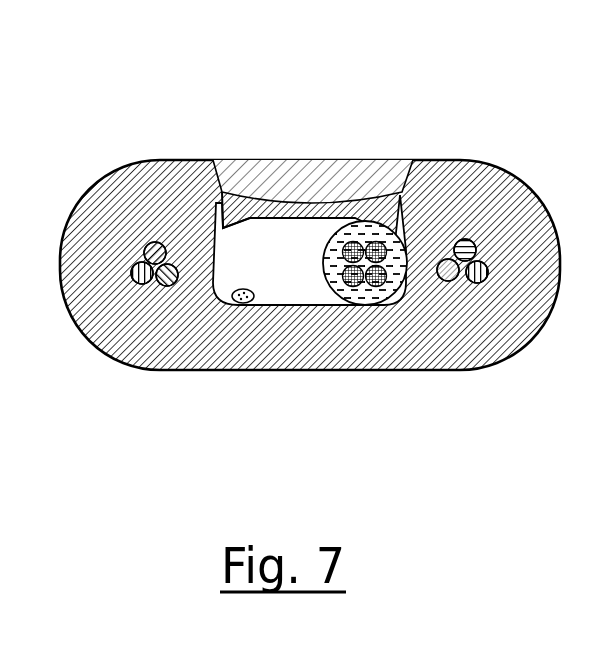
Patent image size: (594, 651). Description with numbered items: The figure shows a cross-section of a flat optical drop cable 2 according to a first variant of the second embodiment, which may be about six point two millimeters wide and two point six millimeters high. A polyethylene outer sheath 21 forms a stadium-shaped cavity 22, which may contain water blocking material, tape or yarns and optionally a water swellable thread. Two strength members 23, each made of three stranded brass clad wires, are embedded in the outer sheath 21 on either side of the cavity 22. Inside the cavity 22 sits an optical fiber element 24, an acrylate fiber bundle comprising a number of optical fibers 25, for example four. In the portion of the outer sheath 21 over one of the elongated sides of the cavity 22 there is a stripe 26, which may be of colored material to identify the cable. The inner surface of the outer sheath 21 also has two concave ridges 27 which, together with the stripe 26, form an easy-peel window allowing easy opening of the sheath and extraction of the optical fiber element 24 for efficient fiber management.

The flat optical drop cable 2 is at (296, 235).
The outer sheath 21 is at (447, 160).
The cavity 22 is at (258, 232).
The strength members 23 is at (134, 265).
The optical fiber element 24 is at (335, 303).
The optical fibers 25 is at (378, 281).
The stripe 26 is at (297, 160).
The concave ridges 27 is at (222, 195).